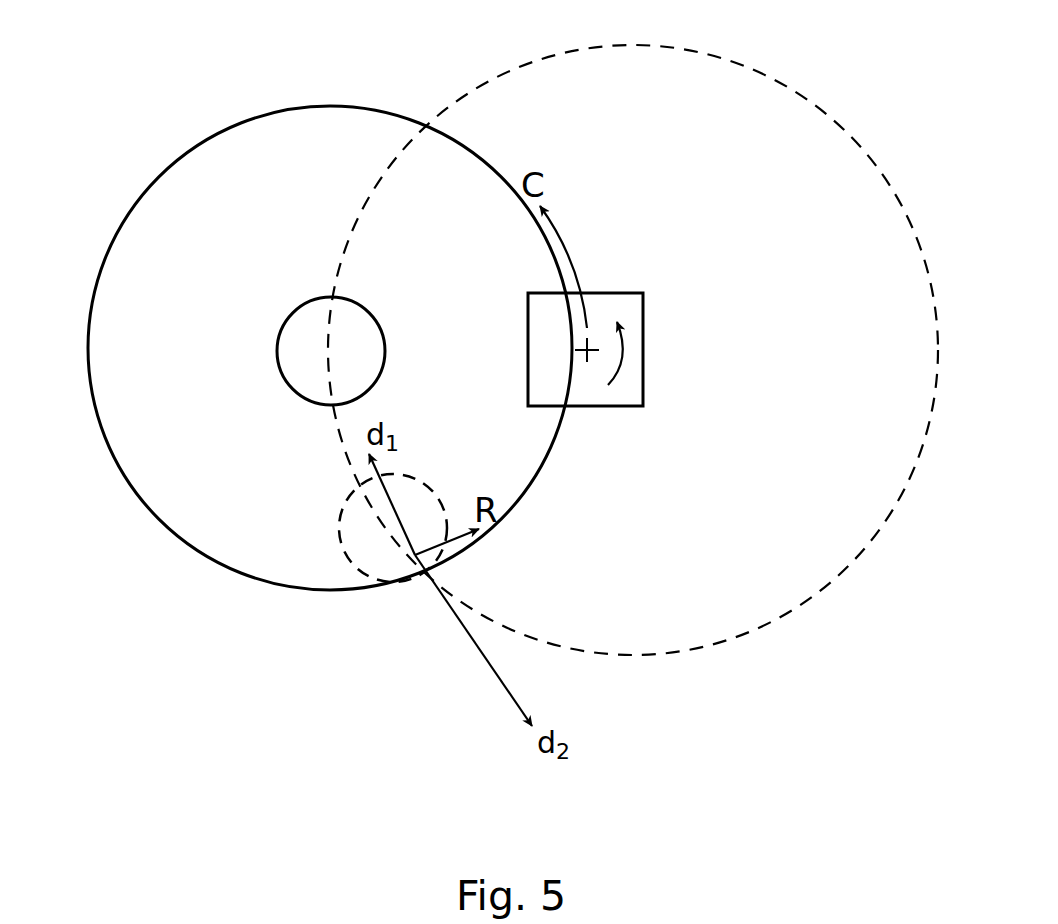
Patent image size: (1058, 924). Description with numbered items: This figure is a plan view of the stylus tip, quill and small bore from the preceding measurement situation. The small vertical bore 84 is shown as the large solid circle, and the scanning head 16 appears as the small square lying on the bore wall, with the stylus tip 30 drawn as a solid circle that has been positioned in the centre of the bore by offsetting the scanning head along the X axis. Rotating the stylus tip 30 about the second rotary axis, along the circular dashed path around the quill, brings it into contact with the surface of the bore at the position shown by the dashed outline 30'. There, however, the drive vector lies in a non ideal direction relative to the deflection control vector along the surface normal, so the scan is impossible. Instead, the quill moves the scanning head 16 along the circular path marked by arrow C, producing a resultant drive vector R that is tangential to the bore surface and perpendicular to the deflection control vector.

The small vertical bore 84 is at (137, 503).
The stylus tip 30 is at (283, 351).
The dashed outline of stylus tip 30' is at (344, 559).
The scanning head 16 is at (643, 330).